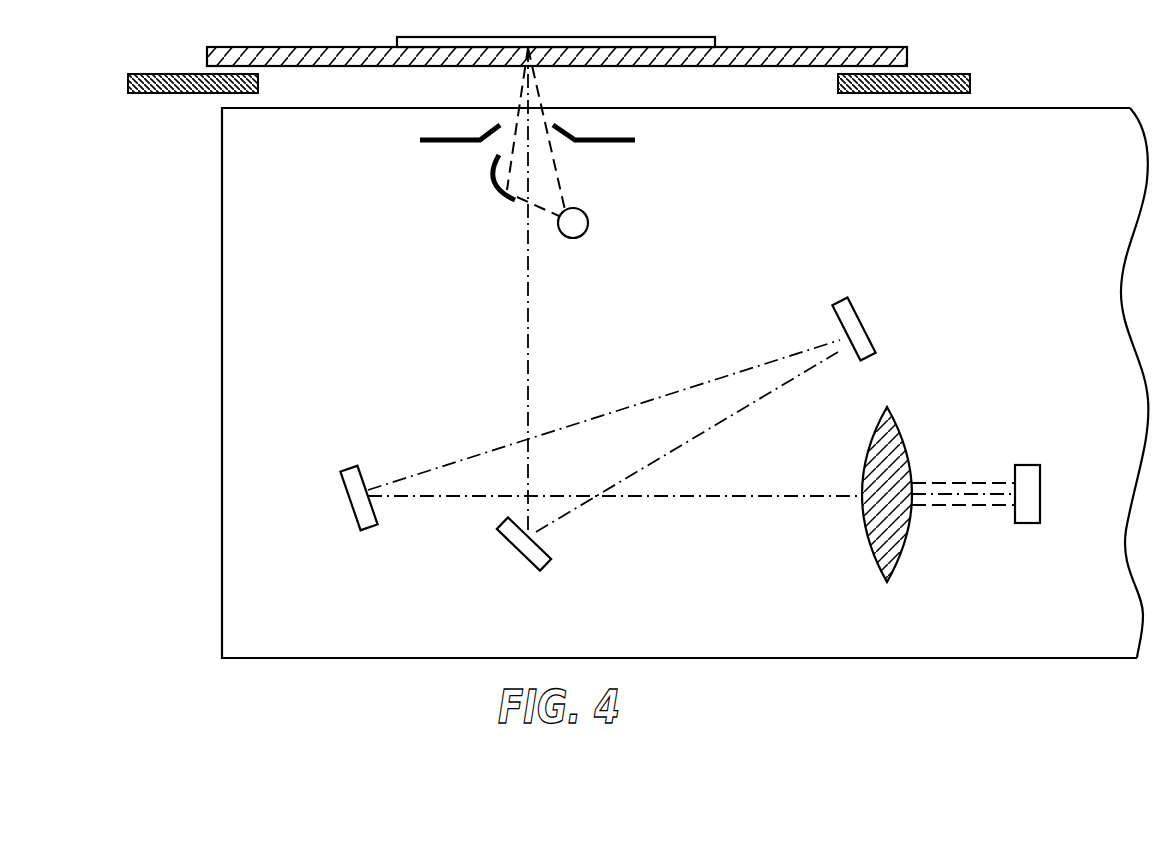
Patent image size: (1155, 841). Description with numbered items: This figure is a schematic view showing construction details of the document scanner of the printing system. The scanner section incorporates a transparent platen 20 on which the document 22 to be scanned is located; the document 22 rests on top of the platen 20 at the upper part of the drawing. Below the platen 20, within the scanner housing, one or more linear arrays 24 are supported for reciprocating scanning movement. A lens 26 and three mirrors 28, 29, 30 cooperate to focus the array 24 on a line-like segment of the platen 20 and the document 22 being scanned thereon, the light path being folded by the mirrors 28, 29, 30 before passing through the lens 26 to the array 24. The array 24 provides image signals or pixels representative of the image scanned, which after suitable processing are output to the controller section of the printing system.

The transparent platen 20 is at (320, 66).
The document 22 is at (608, 36).
The linear array 24 is at (1030, 465).
The lens 26 is at (900, 555).
The mirror 28 is at (528, 562).
The mirror 29 is at (862, 323).
The mirror 30 is at (352, 516).